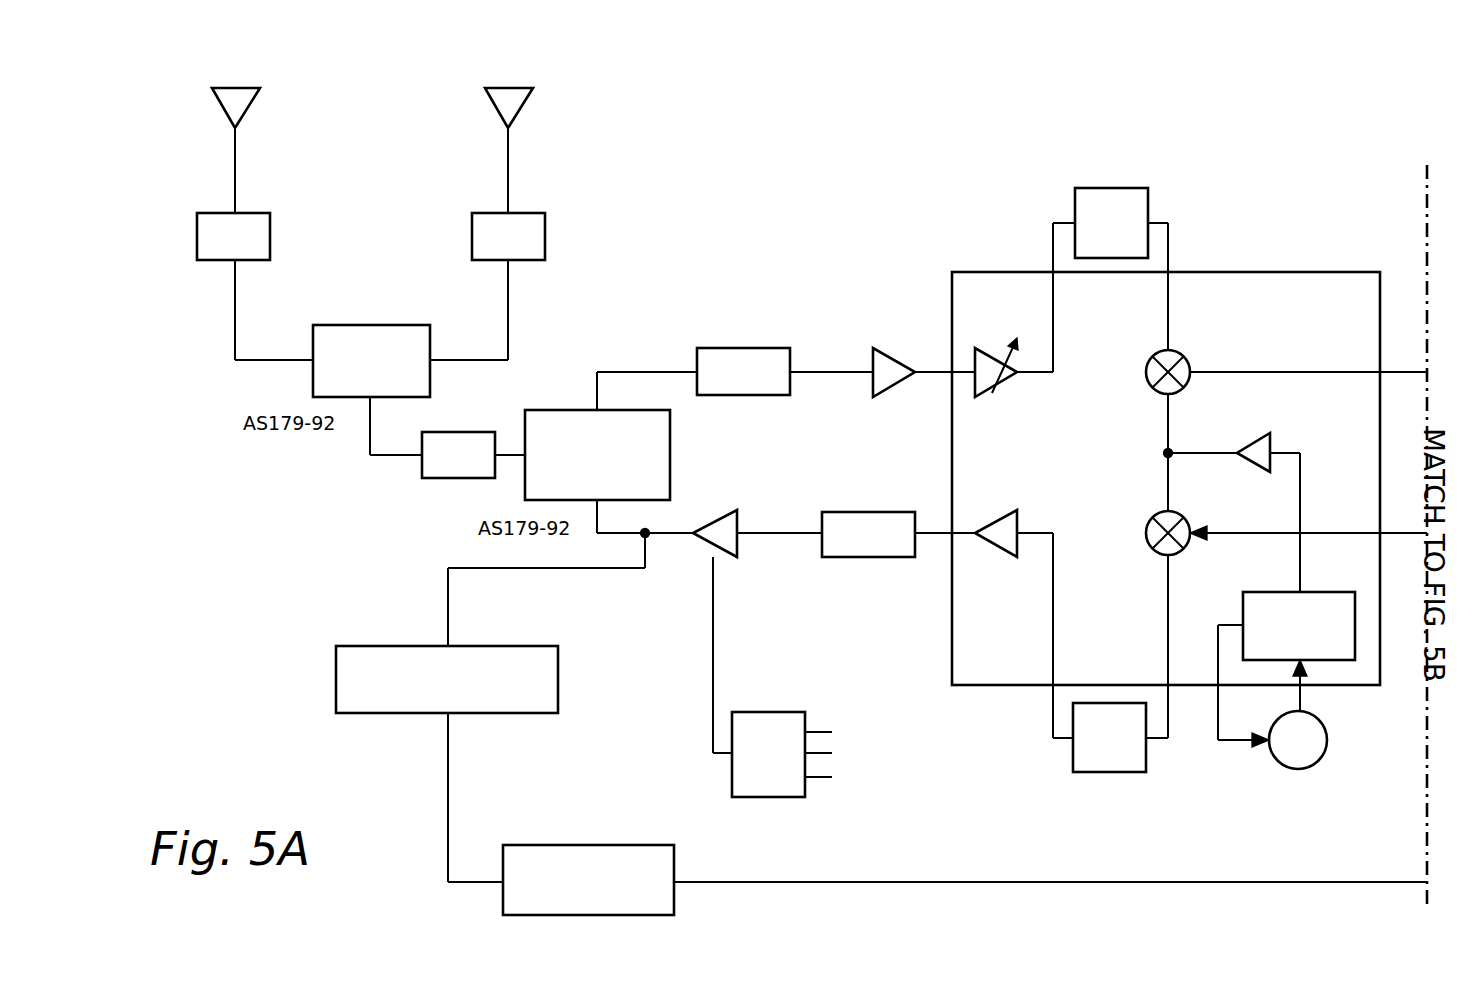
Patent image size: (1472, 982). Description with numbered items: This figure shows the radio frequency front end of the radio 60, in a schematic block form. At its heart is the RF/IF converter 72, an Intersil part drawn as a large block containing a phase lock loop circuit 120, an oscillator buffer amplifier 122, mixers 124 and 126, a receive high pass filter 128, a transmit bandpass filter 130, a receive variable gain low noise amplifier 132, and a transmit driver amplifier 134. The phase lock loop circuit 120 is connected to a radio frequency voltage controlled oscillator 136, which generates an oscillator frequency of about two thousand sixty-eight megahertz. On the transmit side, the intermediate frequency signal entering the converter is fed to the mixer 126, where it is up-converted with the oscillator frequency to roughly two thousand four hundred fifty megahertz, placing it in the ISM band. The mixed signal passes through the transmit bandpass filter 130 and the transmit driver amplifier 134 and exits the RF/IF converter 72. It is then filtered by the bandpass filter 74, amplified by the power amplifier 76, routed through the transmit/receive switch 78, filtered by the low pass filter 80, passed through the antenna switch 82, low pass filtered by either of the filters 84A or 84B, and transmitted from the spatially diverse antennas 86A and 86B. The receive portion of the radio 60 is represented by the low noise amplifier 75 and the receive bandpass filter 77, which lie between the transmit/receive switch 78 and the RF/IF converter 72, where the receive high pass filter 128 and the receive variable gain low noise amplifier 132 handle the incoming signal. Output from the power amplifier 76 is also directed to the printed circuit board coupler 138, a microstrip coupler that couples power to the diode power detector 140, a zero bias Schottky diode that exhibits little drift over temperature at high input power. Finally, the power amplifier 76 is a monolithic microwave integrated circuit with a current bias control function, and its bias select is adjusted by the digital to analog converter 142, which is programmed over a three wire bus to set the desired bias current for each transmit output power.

The radio 60 is at (920, 163).
The RF/IF converter 72 is at (1212, 175).
The bandpass filter 74 is at (878, 512).
The low noise amplifier 75 is at (897, 386).
The power amplifier 76 is at (706, 520).
The receive bandpass filter 77 is at (735, 348).
The transmit/receive switch 78 is at (572, 410).
The low pass filter 80 is at (456, 478).
The antenna switch 82 is at (380, 325).
The low pass filter 84A is at (270, 238).
The low pass filter 84B is at (545, 238).
The spatially diverse antenna 86A is at (250, 112).
The spatially diverse antenna 86B is at (525, 112).
The phase lock loop circuit 120 is at (1278, 592).
The oscillator buffer amplifier 122 is at (1240, 445).
The mixer 124 is at (1147, 371).
The mixer 126 is at (1146, 534).
The receive high pass filter 128 is at (1108, 189).
The transmit bandpass filter 130 is at (1123, 772).
The receive variable gain low noise amplifier 132 is at (983, 355).
The transmit driver amplifier 134 is at (983, 524).
The radio frequency voltage controlled oscillator 136 is at (1327, 750).
The printed circuit board coupler 138 is at (558, 683).
The diode power detector 140 is at (575, 845).
The digital to analog converter 142 is at (770, 797).